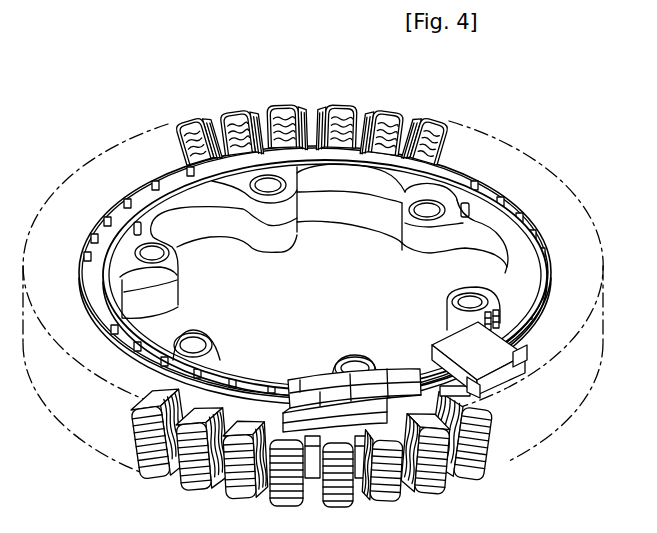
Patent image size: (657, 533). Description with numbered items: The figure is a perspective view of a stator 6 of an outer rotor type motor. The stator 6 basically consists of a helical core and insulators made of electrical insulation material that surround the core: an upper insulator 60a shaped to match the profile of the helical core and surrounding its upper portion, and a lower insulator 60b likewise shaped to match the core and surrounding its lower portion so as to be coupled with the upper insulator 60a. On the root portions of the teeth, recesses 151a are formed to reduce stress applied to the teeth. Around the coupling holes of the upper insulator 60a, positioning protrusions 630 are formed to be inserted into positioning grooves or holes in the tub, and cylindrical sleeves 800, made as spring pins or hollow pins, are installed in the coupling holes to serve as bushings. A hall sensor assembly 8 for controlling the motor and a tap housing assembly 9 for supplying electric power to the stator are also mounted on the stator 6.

The stator 6 is at (99, 96).
The upper insulator 60a is at (362, 183).
The lower insulator 60b is at (202, 228).
The cylindrical sleeve 800 is at (441, 201).
The positioning protrusion 630 is at (475, 203).
The hall sensor assembly 8 is at (303, 372).
The tap housing assembly 9 is at (452, 342).
The recess 151a is at (494, 452).